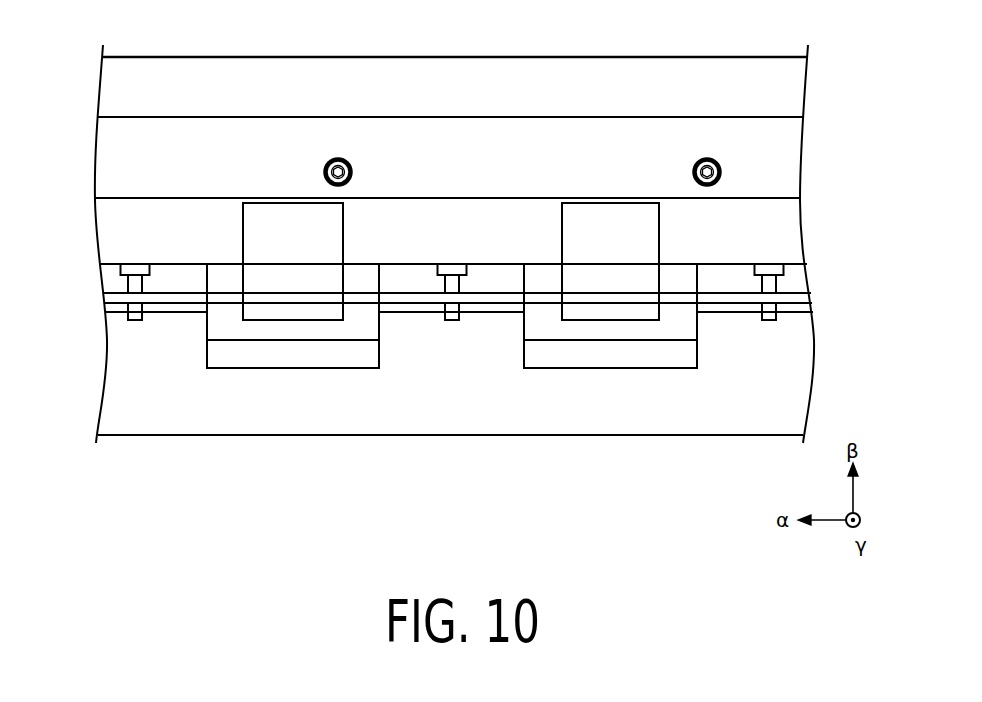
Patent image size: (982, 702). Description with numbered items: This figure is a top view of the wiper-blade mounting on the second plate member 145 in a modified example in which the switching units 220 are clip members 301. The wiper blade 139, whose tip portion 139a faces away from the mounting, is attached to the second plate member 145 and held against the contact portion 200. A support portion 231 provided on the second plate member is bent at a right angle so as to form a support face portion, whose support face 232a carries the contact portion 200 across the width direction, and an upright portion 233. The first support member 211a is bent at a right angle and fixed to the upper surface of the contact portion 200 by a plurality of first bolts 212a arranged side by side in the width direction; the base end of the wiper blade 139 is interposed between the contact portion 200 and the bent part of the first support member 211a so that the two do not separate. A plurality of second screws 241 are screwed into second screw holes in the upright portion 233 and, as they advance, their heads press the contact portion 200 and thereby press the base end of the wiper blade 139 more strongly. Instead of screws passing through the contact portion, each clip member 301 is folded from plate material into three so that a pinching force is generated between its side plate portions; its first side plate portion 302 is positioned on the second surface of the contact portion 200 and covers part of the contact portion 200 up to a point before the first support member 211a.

The wiper blade 139 is at (503, 72).
The tip portion 139a is at (575, 57).
The first support member 211a is at (158, 132).
The first bolts 212a is at (327, 158).
The contact portion 200 is at (793, 212).
The first side plate portion 302 is at (262, 240).
The support face 232a is at (793, 280).
The support portion 231 is at (108, 280).
The upright portion 233 is at (800, 298).
The second plate member 145 is at (117, 370).
The second screws 241 is at (137, 320).
The clip member 301 is at (465, 369).
The switching units 220 is at (297, 322).